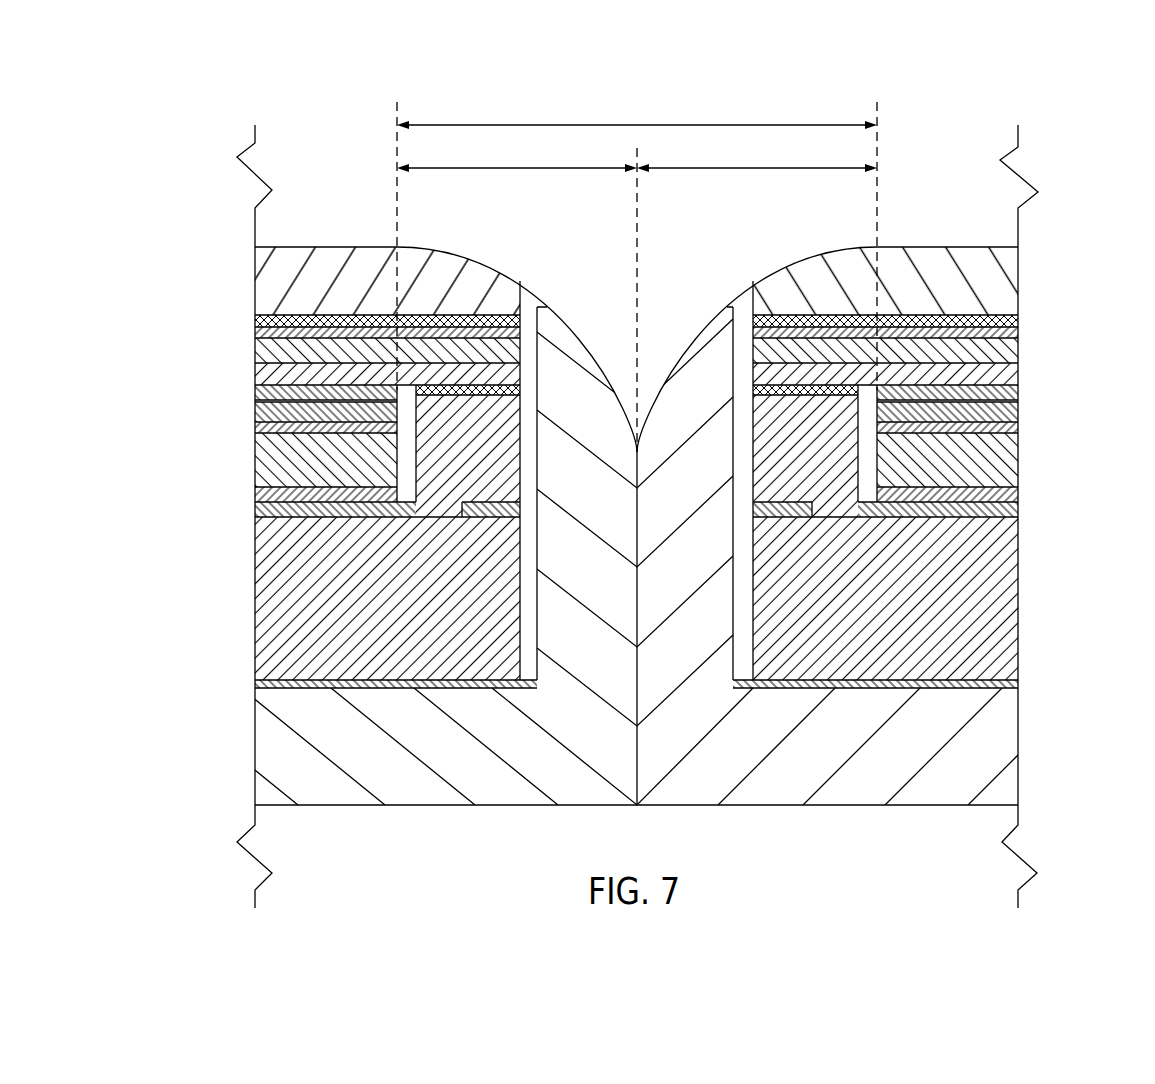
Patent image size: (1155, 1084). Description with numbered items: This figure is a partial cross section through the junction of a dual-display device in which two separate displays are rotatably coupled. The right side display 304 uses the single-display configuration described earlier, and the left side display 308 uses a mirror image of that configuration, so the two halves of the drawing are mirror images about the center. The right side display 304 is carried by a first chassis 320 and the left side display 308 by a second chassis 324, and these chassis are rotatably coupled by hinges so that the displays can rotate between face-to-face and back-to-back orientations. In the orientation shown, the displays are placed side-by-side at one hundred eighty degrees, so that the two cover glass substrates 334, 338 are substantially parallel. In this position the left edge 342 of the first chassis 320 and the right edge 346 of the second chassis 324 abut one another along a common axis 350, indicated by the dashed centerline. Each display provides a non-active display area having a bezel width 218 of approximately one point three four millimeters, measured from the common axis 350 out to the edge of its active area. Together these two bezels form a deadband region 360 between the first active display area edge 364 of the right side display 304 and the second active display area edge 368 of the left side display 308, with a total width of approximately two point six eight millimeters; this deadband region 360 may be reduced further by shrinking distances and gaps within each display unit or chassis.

The bezel width 218 is at (546, 170).
The right side display 304 is at (874, 444).
The left side display 308 is at (391, 444).
The first chassis 320 is at (722, 839).
The second chassis 324 is at (421, 833).
The cover glass substrate 334 is at (922, 247).
The cover glass substrate 338 is at (352, 247).
The left edge 342 is at (638, 613).
The right edge 346 is at (636, 692).
The common axis 350 is at (638, 277).
The deadband region 360 is at (546, 128).
The first active display area edge 364 is at (877, 205).
The second active display area edge 368 is at (397, 205).